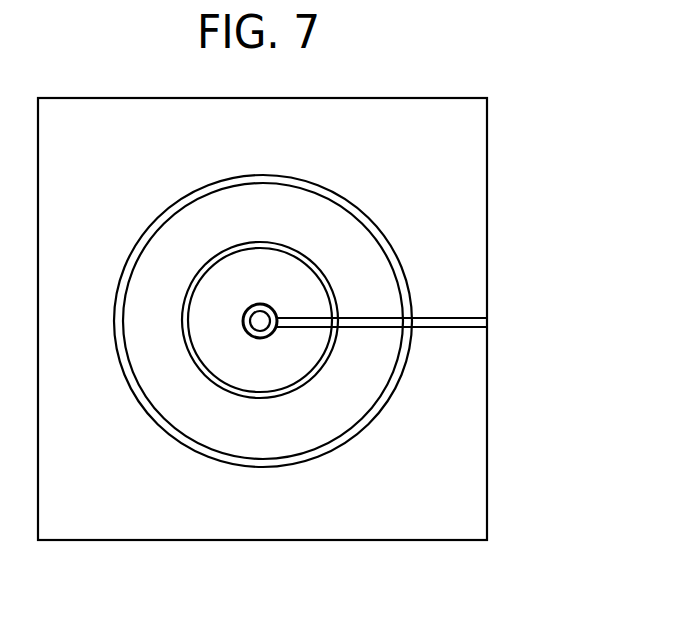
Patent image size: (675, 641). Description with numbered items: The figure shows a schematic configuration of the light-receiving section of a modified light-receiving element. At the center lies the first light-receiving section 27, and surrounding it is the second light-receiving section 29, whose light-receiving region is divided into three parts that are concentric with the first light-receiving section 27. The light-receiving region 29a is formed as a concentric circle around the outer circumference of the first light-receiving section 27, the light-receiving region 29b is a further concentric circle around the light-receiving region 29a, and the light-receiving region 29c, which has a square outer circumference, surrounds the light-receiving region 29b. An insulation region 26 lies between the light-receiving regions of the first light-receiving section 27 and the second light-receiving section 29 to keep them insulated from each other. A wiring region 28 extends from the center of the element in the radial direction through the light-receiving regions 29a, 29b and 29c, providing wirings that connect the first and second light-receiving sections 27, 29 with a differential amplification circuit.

The insulation region 26 is at (258, 338).
The first light-receiving section 27 is at (258, 322).
The wiring region 28 is at (313, 318).
The second light-receiving section 29 is at (572, 370).
The light-receiving region 29a is at (303, 355).
The light-receiving region 29b is at (320, 410).
The light-receiving region 29c is at (420, 482).